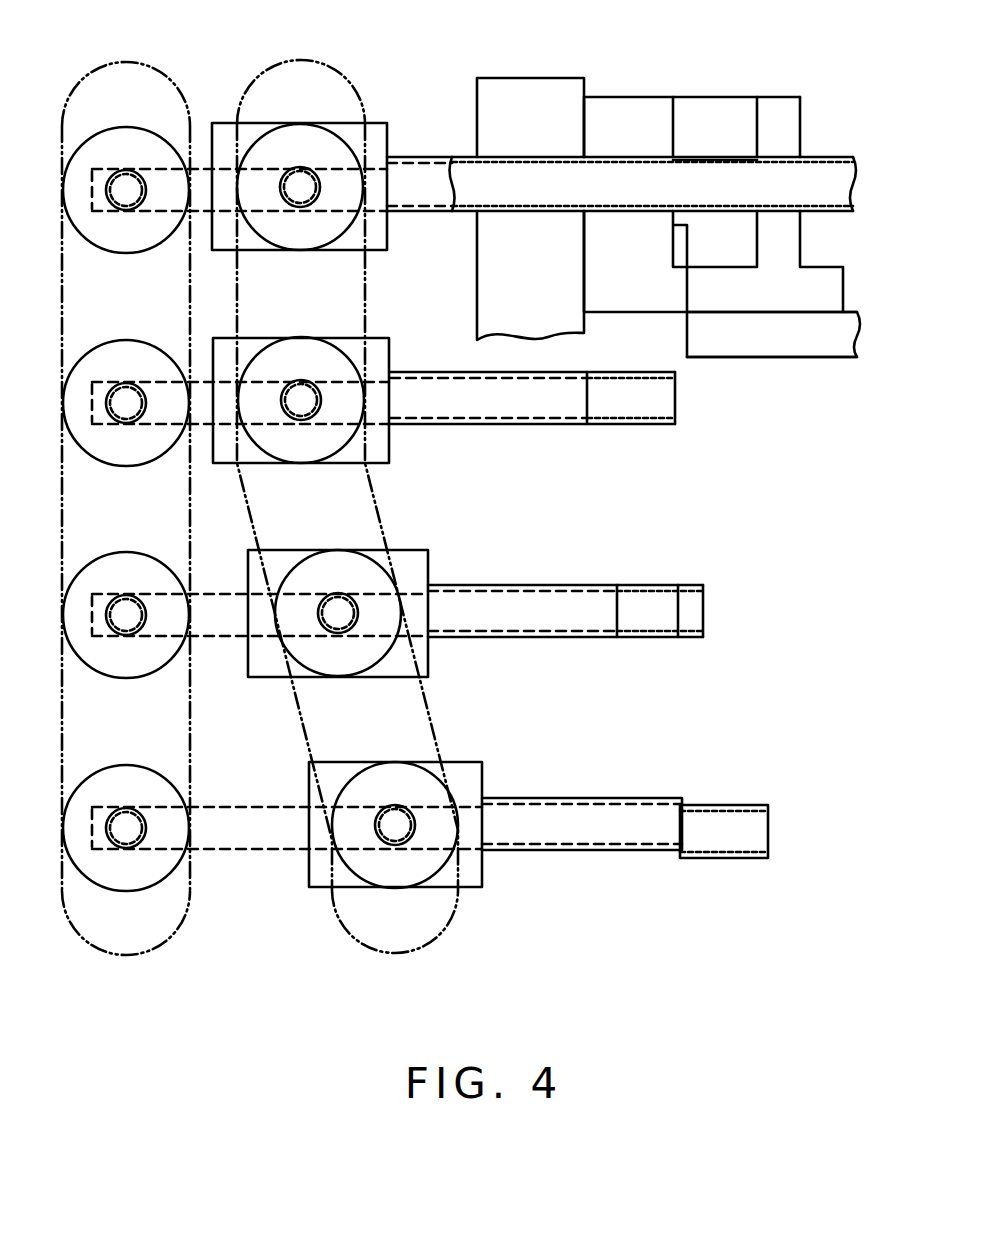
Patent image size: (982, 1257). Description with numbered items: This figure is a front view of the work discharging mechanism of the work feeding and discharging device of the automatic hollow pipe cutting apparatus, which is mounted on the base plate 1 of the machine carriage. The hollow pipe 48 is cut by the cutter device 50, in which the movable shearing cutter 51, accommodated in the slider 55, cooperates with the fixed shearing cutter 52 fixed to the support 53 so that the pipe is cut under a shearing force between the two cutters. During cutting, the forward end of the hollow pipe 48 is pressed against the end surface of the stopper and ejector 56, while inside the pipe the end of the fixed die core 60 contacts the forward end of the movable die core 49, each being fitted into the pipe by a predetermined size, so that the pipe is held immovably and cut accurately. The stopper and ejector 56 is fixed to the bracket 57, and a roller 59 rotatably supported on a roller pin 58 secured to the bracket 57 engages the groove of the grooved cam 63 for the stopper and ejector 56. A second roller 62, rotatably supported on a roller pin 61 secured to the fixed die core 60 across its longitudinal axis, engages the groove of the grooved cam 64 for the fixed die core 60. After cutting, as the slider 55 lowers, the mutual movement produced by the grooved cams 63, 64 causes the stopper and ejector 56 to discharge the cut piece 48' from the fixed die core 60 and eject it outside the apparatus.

The base plate 1 is at (797, 337).
The hollow pipe 48 is at (669, 206).
The cut piece 48' is at (679, 647).
The movable die core 49 is at (748, 190).
The cutter device 50 is at (627, 92).
The movable shearing cutter 51 is at (655, 107).
The fixed shearing cutter 52 is at (725, 107).
The support 53 is at (785, 103).
The slider 55 is at (542, 88).
The stopper and ejector 56 is at (442, 152).
The bracket 57 is at (383, 123).
The roller pin 58 is at (293, 182).
The roller 59 is at (313, 145).
The fixed die core 60 is at (90, 213).
The roller pin 61 is at (130, 182).
The roller 62 is at (104, 148).
The grooved cam 63 is at (360, 137).
The grooved cam 64 is at (186, 118).